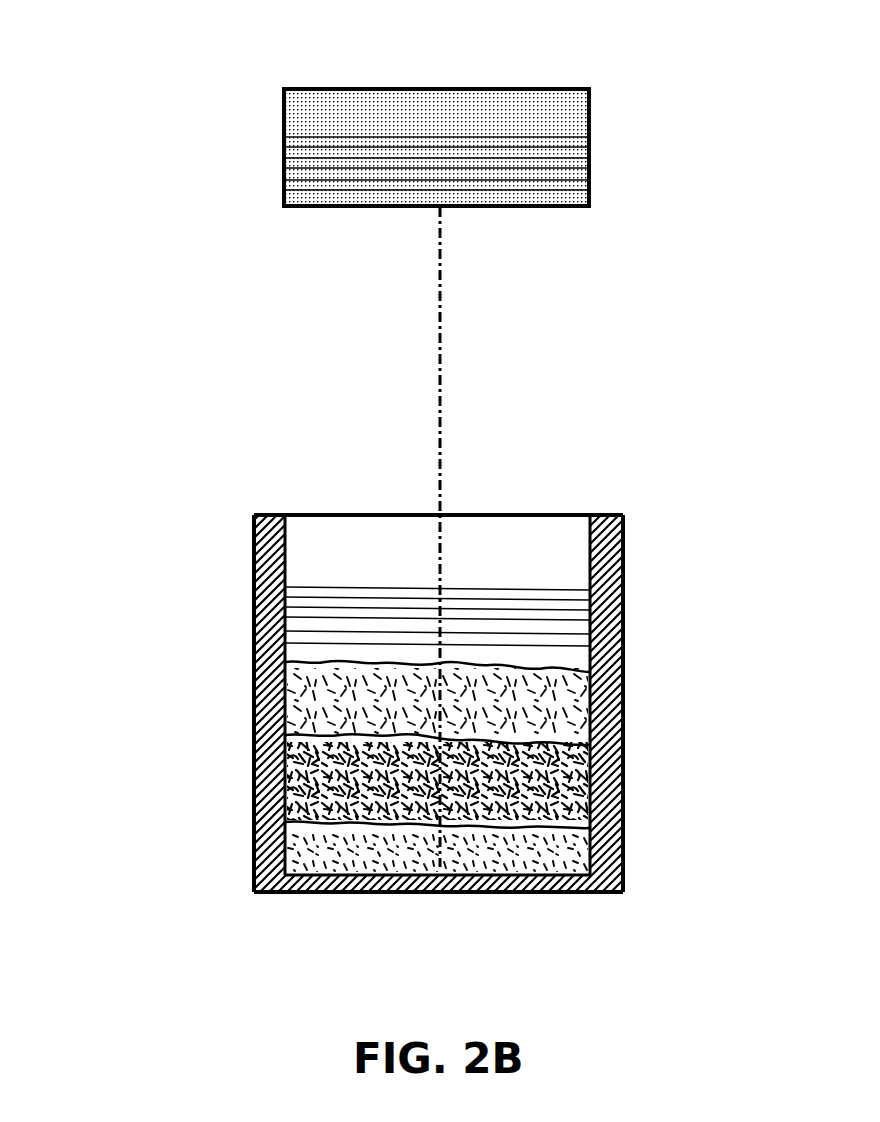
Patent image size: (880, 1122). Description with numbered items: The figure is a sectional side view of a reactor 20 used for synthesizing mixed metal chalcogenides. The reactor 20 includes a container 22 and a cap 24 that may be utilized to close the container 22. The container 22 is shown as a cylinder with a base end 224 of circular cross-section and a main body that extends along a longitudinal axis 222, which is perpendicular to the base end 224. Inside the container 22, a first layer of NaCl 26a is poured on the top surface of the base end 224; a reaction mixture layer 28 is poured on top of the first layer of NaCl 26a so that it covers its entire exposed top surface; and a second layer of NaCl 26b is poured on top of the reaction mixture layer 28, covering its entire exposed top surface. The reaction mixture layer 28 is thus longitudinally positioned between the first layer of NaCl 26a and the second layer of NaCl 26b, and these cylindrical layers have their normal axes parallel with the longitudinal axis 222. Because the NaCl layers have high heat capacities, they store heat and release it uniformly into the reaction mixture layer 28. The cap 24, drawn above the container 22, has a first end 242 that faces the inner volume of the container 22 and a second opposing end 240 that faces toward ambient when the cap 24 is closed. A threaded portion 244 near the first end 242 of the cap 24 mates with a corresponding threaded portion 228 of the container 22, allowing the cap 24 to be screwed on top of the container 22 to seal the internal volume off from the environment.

The reactor 20 is at (102, 95).
The container 22 is at (435, 740).
The cap 24 is at (405, 148).
The first layer of NaCl 26a is at (302, 845).
The second layer of NaCl 26b is at (305, 690).
The reaction mixture layer 28 is at (297, 768).
The longitudinal axis 222 is at (440, 448).
The base end 224 is at (347, 892).
The threaded portion 228 is at (311, 608).
The second opposing end 240 is at (383, 89).
The first end 242 is at (362, 207).
The threaded portion 244 is at (300, 182).